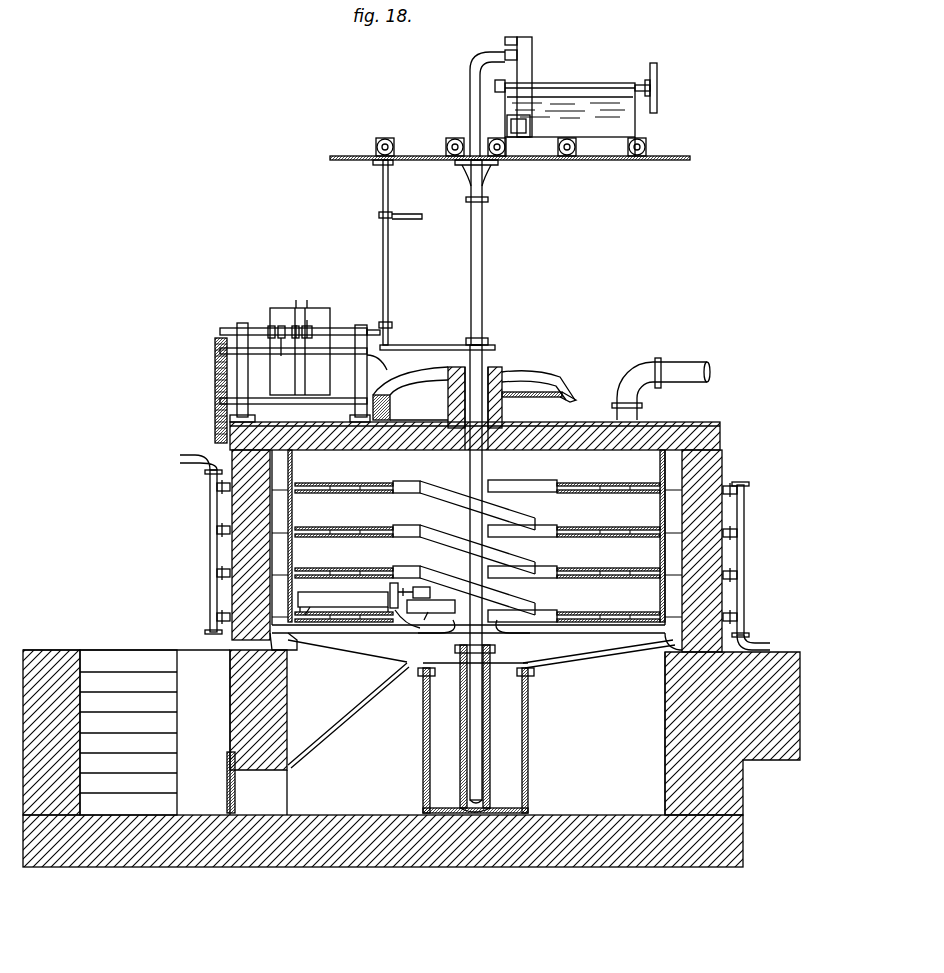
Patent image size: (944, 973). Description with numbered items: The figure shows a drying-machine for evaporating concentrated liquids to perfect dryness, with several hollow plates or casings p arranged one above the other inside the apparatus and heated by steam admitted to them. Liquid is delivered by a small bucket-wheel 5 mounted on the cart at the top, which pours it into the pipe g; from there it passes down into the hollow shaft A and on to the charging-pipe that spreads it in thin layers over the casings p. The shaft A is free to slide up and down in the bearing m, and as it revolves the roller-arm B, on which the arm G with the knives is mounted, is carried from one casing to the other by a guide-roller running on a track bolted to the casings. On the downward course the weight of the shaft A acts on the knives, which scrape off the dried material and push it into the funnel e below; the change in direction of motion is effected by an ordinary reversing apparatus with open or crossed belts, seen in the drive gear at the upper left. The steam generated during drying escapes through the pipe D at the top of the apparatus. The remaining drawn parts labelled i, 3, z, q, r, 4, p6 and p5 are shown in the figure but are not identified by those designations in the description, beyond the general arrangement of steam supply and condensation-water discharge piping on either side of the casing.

The bucket-wheel 5 is at (525, 87).
The pipe g is at (480, 198).
The collars on shaft i is at (437, 274).
The control box 3 is at (297, 367).
The bearing m is at (474, 393).
The bracket z is at (442, 367).
The pipe D is at (661, 383).
The hollow shaft A is at (476, 550).
The hollow plates or casings p is at (477, 544).
The arm blocks q is at (522, 551).
The inclined arms r is at (464, 548).
The arm G is at (343, 602).
The roller-arm B is at (422, 605).
The supports 4 is at (370, 609).
The left valve pipe p6 is at (205, 544).
The right valve pipe p5 is at (746, 566).
The funnel e is at (318, 726).